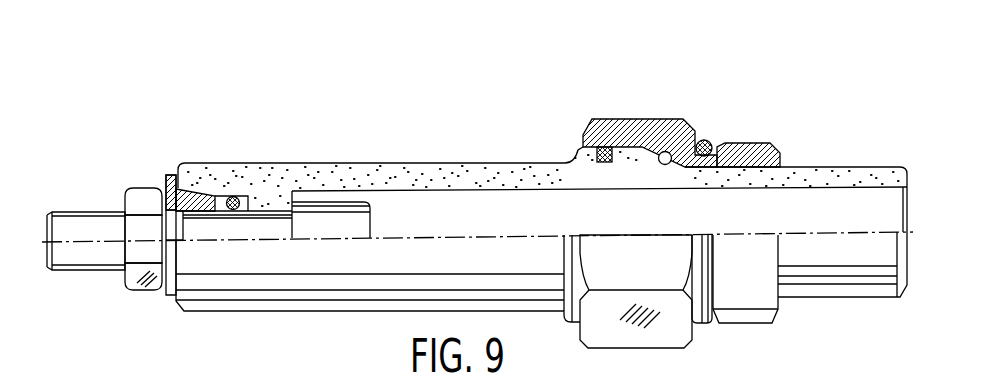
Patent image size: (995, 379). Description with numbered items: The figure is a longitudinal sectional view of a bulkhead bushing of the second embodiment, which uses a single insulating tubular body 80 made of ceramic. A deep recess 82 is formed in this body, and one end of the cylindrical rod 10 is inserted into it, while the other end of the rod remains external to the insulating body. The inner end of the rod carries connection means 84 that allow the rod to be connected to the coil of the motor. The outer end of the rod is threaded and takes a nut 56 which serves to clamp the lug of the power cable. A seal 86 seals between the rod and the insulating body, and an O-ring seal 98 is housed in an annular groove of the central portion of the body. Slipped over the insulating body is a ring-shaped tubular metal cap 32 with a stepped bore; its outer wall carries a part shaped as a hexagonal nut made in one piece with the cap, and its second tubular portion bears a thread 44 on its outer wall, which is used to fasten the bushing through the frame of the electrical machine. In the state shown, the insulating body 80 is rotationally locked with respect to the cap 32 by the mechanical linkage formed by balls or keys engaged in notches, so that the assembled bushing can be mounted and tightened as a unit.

The cylindrical rod 10 is at (84, 225).
The nut 56 is at (148, 198).
The seal 86 is at (234, 197).
The connection means 84 is at (333, 213).
The deep recess 82 is at (392, 193).
The tubular body 80 is at (442, 172).
The O-ring seal 98 is at (605, 153).
The tubular metal cap 32 is at (668, 117).
The thread 44 is at (758, 153).